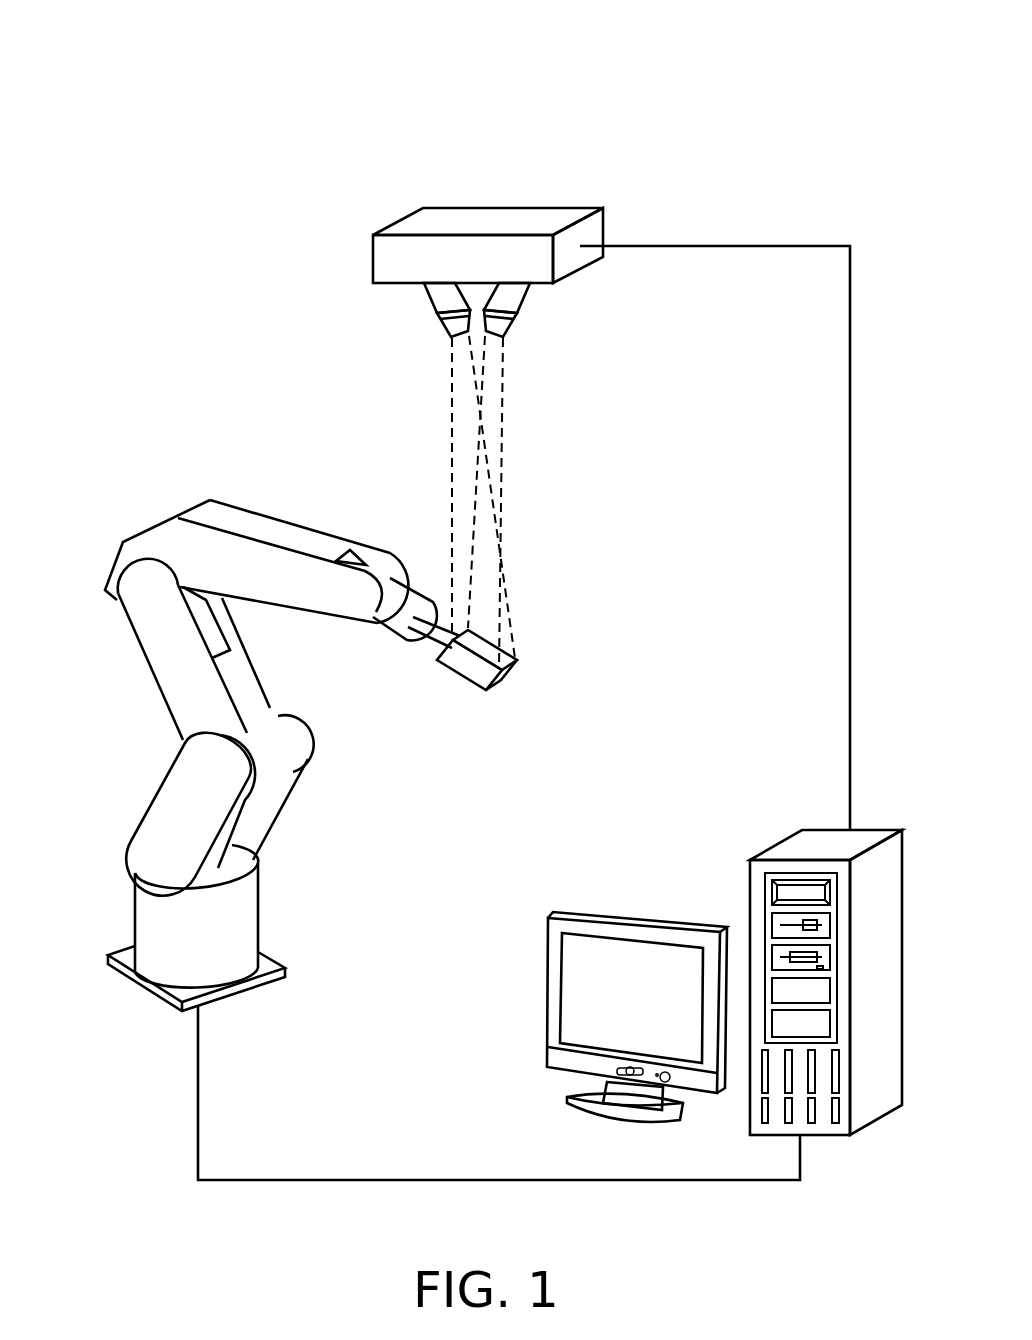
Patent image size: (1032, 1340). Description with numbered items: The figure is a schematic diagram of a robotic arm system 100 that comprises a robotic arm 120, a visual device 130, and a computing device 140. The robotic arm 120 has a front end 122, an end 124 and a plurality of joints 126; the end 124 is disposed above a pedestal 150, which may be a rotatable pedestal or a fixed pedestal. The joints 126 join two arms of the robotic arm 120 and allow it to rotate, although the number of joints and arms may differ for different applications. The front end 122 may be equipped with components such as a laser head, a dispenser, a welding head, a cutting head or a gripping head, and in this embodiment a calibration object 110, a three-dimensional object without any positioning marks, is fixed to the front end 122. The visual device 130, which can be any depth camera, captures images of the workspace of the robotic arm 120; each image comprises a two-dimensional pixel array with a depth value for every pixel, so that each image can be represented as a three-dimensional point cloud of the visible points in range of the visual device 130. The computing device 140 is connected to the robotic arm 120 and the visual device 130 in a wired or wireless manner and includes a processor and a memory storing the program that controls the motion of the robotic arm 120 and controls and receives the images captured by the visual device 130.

The robotic arm system 100 is at (803, 85).
The calibration object 110 is at (463, 665).
The robotic arm 120 is at (118, 521).
The front end 122 is at (412, 645).
The end 124 is at (210, 970).
The joints 126 is at (378, 572).
The visual device 130 is at (487, 220).
The computing device 140 is at (805, 840).
The pedestal 150 is at (165, 995).